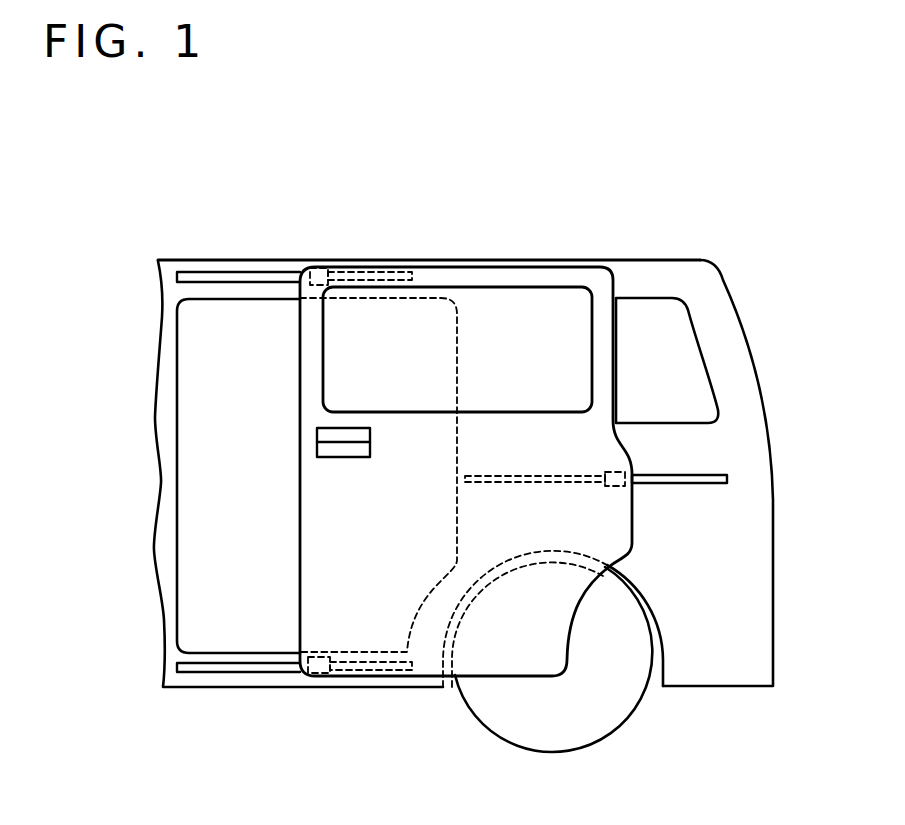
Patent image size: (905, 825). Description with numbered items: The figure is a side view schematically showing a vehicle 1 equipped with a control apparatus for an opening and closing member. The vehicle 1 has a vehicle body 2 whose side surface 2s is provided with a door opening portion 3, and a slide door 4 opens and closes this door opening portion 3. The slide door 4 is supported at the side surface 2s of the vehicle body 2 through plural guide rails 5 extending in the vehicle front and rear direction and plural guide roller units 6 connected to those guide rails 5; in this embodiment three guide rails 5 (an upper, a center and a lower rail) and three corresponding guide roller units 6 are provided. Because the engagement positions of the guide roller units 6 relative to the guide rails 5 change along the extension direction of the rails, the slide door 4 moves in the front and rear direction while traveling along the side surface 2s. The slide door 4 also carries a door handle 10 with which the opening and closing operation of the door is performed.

The vehicle 1 is at (118, 191).
The vehicle body 2 is at (650, 260).
The side surface 2s is at (752, 364).
The door opening portion 3 is at (181, 505).
The slide door 4 is at (300, 383).
The guide rails 5 is at (205, 272).
The guide roller units 6 is at (316, 268).
The door handle 10 is at (317, 420).